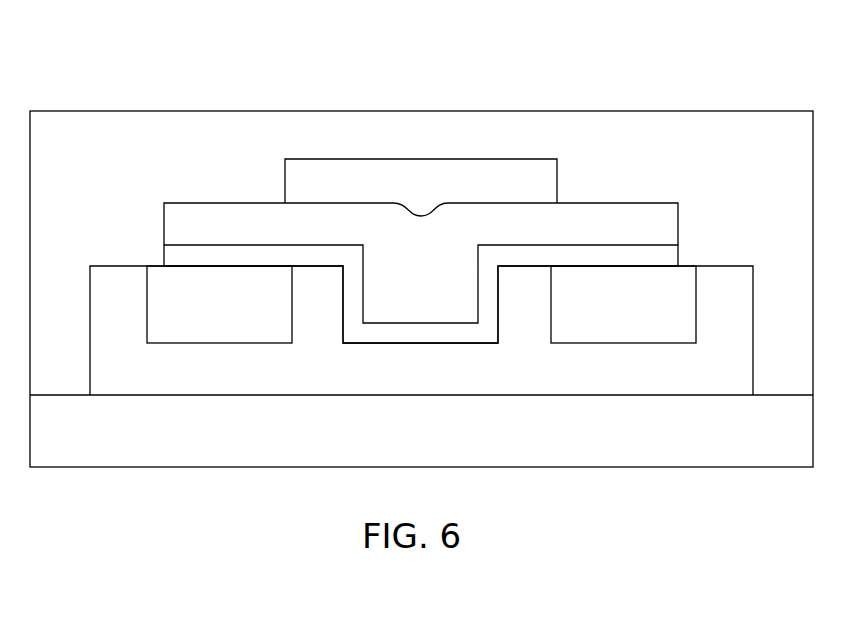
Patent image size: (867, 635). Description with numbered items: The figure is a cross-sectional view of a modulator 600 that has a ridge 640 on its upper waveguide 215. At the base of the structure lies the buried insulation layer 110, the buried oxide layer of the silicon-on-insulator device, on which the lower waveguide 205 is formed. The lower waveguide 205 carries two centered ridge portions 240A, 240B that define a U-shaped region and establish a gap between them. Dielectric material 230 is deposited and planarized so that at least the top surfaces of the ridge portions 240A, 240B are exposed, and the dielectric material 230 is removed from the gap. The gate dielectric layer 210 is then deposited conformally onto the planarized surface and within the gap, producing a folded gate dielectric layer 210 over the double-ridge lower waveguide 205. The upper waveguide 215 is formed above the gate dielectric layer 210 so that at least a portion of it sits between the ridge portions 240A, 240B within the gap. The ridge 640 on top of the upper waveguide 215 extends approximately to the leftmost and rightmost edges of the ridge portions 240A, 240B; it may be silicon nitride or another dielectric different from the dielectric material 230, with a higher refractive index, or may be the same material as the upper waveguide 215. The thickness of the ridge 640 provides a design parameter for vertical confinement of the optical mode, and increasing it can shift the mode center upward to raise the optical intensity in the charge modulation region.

The modulator 600 is at (683, 85).
The dielectric material 230 is at (136, 153).
The buried insulation layer 110 is at (776, 441).
The lower waveguide 205 is at (754, 338).
The gate dielectric layer 210 is at (678, 251).
The upper waveguide 215 is at (678, 225).
The ridge 640 is at (557, 172).
The ridge portion 240A is at (319, 312).
The ridge portion 240B is at (530, 312).